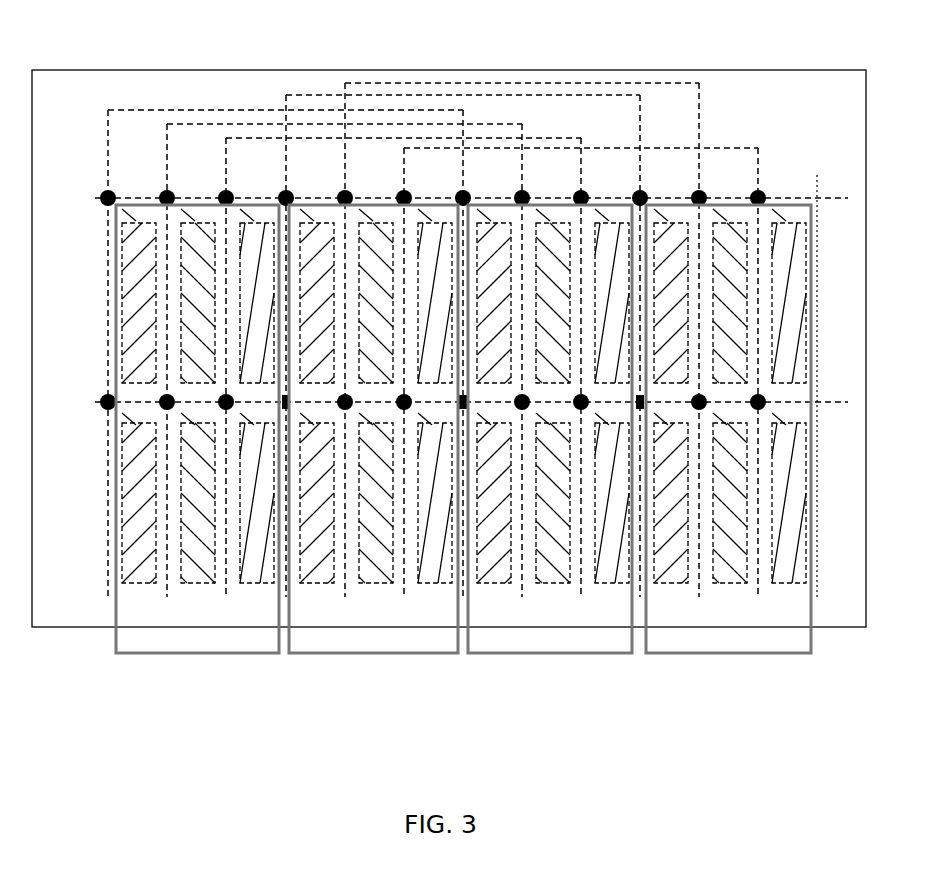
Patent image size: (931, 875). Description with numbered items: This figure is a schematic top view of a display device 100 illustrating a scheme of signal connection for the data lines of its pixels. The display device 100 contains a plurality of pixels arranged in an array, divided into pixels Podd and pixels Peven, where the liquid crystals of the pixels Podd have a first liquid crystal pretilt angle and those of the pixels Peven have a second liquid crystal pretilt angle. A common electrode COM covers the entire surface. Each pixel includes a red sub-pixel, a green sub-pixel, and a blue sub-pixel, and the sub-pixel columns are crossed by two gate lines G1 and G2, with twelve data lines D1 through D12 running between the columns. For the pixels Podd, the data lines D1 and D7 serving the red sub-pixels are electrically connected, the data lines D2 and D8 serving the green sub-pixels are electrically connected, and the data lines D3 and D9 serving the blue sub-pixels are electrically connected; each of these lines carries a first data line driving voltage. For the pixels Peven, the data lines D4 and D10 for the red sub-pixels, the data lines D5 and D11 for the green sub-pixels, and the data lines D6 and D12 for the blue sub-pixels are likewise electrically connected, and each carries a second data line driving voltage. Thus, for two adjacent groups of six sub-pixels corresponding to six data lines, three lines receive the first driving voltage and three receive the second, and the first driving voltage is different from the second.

The display device 100 is at (135, 55).
The common electrode COM is at (677, 82).
The data line D1 is at (285, 353).
The data line D2 is at (344, 360).
The data line D3 is at (403, 367).
The data line D4 is at (463, 346).
The data line D5 is at (360, 340).
The data line D6 is at (581, 372).
The data line D7 is at (478, 353).
The data line D8 is at (537, 360).
The data line D9 is at (596, 367).
The data line D10 is at (661, 346).
The data line D11 is at (720, 340).
The data line D12 is at (779, 372).
The gate line G1 is at (450, 387).
The gate line G2 is at (450, 401).
The pixels in odd-numbered columns or rows Podd is at (143, 655).
The pixels in even-numbered columns or rows Peven is at (325, 655).